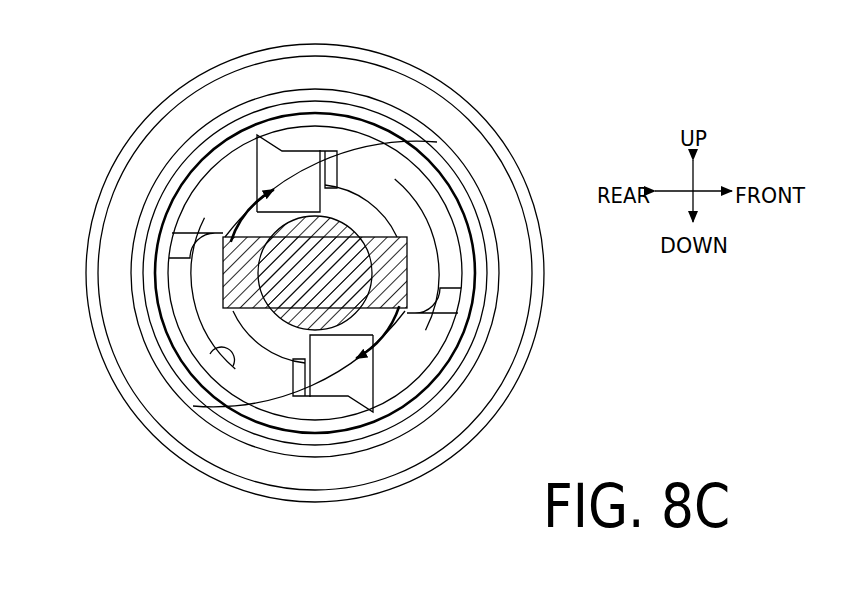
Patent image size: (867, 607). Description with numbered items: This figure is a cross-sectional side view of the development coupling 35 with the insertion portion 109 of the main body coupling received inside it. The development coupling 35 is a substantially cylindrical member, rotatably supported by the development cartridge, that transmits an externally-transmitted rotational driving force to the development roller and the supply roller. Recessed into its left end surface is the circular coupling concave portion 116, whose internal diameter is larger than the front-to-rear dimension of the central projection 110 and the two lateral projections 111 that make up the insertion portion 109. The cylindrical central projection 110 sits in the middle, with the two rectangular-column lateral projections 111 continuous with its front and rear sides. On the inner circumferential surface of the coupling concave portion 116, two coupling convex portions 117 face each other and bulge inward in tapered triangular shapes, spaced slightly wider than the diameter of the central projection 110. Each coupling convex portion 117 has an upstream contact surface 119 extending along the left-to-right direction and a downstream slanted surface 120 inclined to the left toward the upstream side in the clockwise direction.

The development coupling 35 is at (101, 176).
The insertion portion 109 is at (480, 8).
The central projection 110 is at (381, 245).
The lateral projections 111 is at (352, 212).
The coupling concave portion 116 is at (232, 365).
The coupling convex portions 117 is at (221, 189).
The contact surface 119 is at (192, 253).
The slanted surface 120 is at (296, 170).